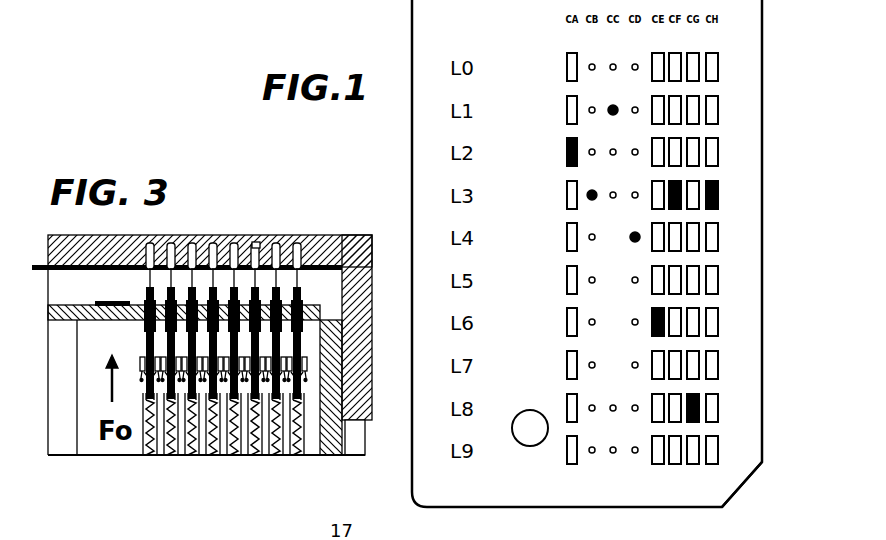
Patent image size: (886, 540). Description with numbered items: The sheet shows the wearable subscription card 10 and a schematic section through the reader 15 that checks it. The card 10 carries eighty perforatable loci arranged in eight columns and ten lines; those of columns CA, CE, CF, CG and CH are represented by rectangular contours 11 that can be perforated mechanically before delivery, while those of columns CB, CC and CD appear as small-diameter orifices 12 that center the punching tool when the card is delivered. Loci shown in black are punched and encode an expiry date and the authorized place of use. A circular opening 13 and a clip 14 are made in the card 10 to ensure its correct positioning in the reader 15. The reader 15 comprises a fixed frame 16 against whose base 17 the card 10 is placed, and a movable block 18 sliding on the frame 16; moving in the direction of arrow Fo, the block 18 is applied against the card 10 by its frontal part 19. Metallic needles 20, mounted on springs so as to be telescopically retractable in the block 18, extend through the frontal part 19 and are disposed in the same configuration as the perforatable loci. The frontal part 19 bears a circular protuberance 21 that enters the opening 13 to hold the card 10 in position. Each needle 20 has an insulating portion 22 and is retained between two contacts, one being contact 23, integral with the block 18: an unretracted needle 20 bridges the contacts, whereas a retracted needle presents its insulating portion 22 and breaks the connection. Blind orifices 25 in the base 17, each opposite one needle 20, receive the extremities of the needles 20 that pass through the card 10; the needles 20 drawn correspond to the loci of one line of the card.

In FIG. 3, the card 10 is at (118, 270).
In FIG. 1, the card 10 is at (424, 30).
In FIG. 1, the rectangular contours 11 is at (565, 200).
In FIG. 1, the orifices 12 is at (595, 325).
In FIG. 1, the circular opening 13 is at (530, 410).
In FIG. 1, the clip 14 is at (740, 492).
In FIG. 3, the reader 15 is at (340, 235).
In FIG. 3, the fixed frame 16 is at (372, 403).
In FIG. 3, the base 17 is at (212, 238).
In FIG. 3, the movable block 18 is at (310, 457).
In FIG. 3, the frontal part 19 is at (66, 322).
In FIG. 3, the needles 20 is at (305, 312).
In FIG. 3, the circular protuberance 21 is at (114, 292).
In FIG. 3, the insulating portion 22 is at (332, 328).
In FIG. 3, the contact 23 is at (162, 368).
In FIG. 3, the blind orifices 25 is at (258, 242).